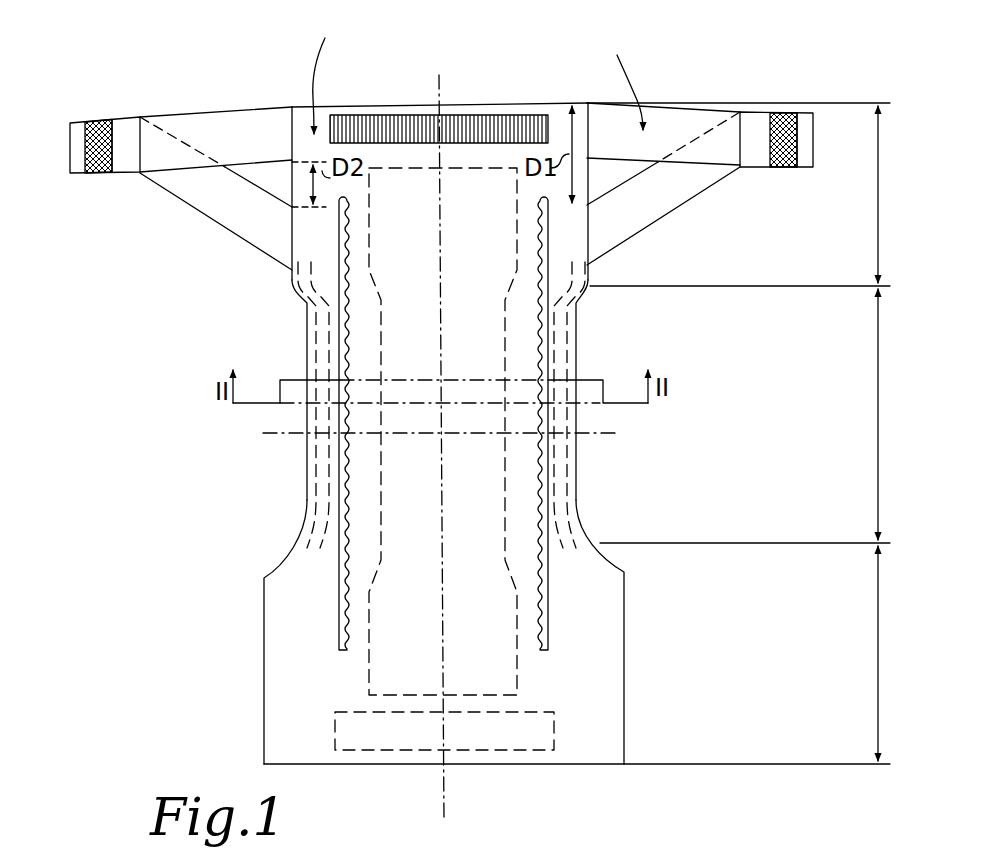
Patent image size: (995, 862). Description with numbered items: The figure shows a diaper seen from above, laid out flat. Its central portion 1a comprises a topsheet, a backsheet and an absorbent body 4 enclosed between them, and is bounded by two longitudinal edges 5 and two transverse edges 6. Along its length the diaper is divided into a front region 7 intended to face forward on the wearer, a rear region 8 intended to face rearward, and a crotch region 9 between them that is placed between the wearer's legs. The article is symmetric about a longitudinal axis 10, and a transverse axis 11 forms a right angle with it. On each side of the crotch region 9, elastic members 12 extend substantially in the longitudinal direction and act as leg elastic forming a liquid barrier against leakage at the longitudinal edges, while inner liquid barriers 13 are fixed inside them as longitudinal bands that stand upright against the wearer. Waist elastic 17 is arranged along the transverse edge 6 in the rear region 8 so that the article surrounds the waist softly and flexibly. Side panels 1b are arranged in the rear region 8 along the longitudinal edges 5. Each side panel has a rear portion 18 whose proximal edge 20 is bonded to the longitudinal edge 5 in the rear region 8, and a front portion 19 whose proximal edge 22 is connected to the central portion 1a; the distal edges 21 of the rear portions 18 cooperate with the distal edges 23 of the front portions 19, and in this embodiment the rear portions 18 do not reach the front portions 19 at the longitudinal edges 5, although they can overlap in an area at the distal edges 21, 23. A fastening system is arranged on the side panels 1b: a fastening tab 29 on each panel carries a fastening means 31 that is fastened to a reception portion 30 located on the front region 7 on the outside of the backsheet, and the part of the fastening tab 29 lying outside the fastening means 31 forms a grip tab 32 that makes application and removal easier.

The central portion 1a is at (327, 72).
The side panels 1b is at (619, 79).
The absorbent body 4 is at (480, 470).
The longitudinal edges 5 is at (264, 612).
The transverse edges 6 is at (477, 105).
The front region 7 is at (878, 638).
The rear region 8 is at (878, 194).
The crotch region 9 is at (878, 405).
The longitudinal axis 10 is at (440, 795).
The transverse axis 11 is at (283, 433).
The elastic members 12 is at (555, 356).
The inner liquid barriers 13 is at (340, 626).
The waist elastic 17 is at (395, 120).
The rear portions 18 is at (219, 125).
The front portions 19 is at (245, 224).
The proximal edges 20 is at (287, 127).
The distal edges 21 is at (201, 207).
The proximal edges 22 is at (292, 238).
The distal edges 23 is at (136, 158).
The fastening tab 29 is at (132, 128).
The reception portion 30 is at (530, 746).
The fastening means 31 is at (100, 176).
The grip tab 32 is at (70, 121).